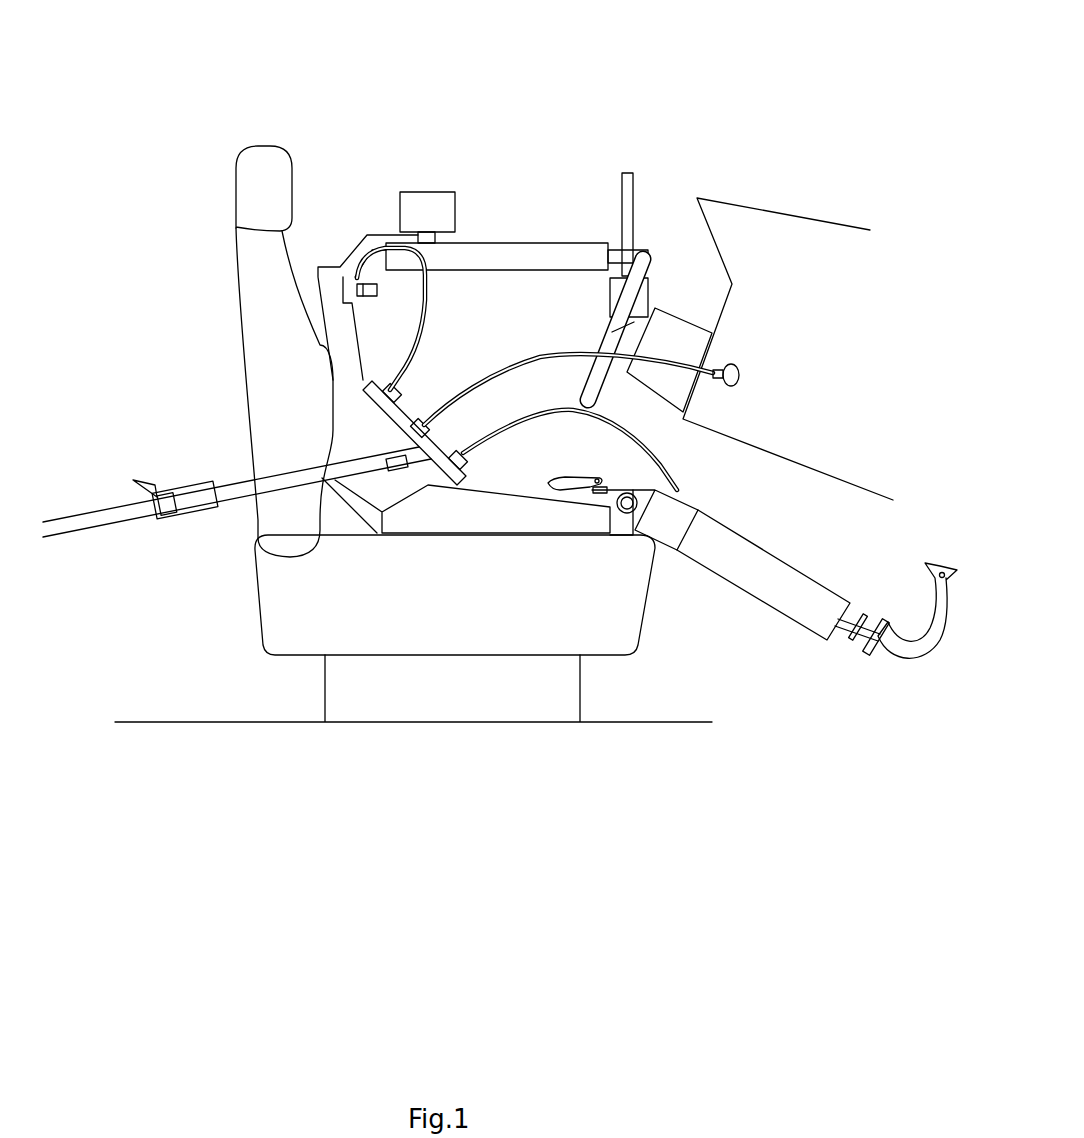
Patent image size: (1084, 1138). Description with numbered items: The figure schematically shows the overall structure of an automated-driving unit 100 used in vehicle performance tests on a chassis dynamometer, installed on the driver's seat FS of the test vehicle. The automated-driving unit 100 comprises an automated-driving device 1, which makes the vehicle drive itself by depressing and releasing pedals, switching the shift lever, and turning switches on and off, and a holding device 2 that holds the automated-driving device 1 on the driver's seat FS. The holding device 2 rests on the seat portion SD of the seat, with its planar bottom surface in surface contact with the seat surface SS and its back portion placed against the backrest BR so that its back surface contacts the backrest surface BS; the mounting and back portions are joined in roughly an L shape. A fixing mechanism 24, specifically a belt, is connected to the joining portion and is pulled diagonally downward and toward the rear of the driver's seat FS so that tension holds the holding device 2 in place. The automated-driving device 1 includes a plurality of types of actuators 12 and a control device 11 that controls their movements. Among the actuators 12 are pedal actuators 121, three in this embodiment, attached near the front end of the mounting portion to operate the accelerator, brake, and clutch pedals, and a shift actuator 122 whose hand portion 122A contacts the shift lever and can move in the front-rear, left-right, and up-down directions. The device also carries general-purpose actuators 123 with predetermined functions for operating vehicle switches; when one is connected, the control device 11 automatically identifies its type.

The automated-driving unit 100 is at (620, 58).
The seat FS is at (413, 408).
The backrest surface BS is at (290, 250).
The backrest BR is at (240, 290).
The seat surface SS is at (340, 523).
The seat portion SD is at (255, 608).
The fixing mechanism 24 is at (230, 483).
The holding device 2 is at (530, 550).
The automated-driving device 1 is at (528, 331).
The control device 11 is at (405, 410).
The shift actuator 122 is at (525, 240).
The hand portion 122A is at (608, 290).
The general-purpose actuator 123 is at (495, 370).
The actuator 12 is at (795, 617).
The pedal actuator 121 is at (740, 590).